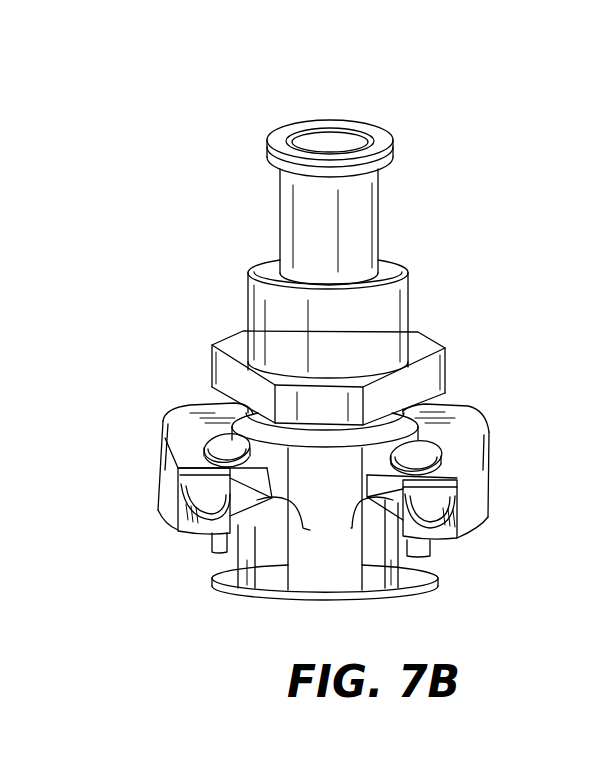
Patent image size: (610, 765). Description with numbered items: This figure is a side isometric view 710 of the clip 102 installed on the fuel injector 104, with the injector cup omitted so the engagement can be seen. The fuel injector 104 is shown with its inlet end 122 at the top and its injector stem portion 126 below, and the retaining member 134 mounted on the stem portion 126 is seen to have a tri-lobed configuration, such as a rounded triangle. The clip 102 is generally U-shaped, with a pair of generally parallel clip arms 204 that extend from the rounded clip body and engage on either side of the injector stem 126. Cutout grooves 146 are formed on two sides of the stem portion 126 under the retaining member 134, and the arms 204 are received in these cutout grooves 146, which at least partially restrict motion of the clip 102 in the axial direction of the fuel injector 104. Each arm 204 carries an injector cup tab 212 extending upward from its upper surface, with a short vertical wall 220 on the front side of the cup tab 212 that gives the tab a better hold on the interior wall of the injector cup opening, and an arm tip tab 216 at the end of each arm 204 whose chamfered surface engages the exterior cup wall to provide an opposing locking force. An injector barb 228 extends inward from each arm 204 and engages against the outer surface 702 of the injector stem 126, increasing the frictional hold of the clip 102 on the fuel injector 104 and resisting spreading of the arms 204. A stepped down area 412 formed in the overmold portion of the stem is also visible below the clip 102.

The side isometric view 710 is at (198, 90).
The fuel injector 104 is at (450, 221).
The inlet end 122 is at (268, 138).
The retaining member 134 is at (215, 332).
The clip 102 is at (151, 411).
The clip arms 204 is at (158, 523).
The injector cup tab 212 is at (217, 432).
The vertical wall 220 is at (190, 467).
The arm tip tab 216 is at (178, 490).
The cutout grooves 146 is at (253, 523).
The injector stem portion 126 is at (272, 535).
The outer surface 702 is at (338, 488).
The injector barb 228 is at (351, 528).
The stepped down area 412 is at (412, 565).